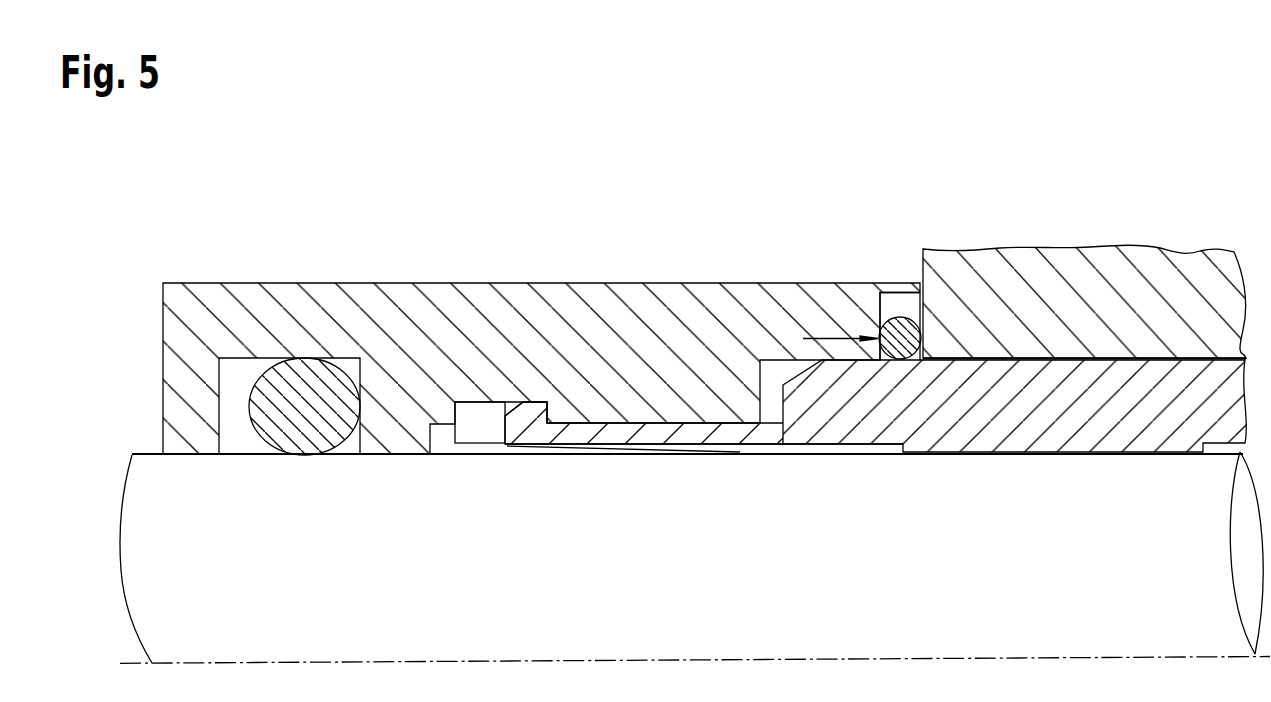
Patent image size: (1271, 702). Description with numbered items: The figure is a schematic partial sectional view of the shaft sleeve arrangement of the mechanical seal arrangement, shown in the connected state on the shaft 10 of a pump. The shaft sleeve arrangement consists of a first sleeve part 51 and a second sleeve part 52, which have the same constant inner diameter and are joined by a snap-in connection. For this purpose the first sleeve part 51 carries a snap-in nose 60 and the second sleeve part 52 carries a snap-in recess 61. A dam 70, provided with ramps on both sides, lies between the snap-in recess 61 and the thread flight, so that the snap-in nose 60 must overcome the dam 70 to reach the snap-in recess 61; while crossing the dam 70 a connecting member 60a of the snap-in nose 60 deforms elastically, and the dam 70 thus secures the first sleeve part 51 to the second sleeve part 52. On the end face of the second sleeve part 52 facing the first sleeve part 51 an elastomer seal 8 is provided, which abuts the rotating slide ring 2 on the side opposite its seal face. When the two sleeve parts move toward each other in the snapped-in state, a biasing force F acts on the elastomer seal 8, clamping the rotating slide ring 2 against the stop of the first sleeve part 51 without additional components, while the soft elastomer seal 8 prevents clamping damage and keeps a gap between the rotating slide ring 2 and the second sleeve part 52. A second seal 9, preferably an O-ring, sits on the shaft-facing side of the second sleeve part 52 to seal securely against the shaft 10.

The rotating slide ring 2 is at (1067, 300).
The elastomer seal 8 is at (902, 338).
The second seal 9 is at (310, 410).
The shaft 10 is at (143, 520).
The first sleeve part 51 is at (977, 415).
The second sleeve part 52 is at (445, 320).
The snap-in nose 60 is at (530, 415).
The connecting member 60a is at (658, 448).
The snap-in recess 61 is at (492, 403).
The dam 70 is at (467, 443).
The biasing force F is at (832, 338).